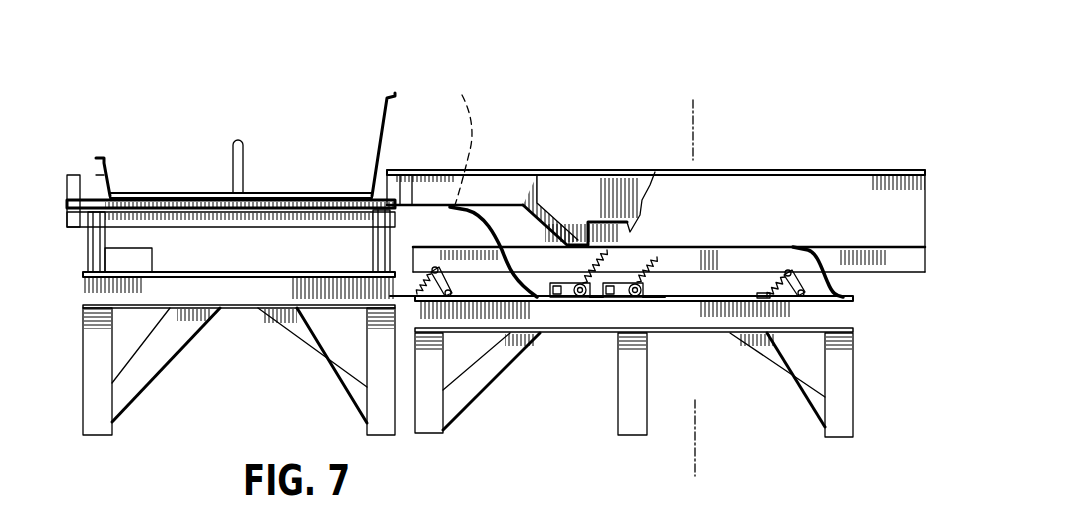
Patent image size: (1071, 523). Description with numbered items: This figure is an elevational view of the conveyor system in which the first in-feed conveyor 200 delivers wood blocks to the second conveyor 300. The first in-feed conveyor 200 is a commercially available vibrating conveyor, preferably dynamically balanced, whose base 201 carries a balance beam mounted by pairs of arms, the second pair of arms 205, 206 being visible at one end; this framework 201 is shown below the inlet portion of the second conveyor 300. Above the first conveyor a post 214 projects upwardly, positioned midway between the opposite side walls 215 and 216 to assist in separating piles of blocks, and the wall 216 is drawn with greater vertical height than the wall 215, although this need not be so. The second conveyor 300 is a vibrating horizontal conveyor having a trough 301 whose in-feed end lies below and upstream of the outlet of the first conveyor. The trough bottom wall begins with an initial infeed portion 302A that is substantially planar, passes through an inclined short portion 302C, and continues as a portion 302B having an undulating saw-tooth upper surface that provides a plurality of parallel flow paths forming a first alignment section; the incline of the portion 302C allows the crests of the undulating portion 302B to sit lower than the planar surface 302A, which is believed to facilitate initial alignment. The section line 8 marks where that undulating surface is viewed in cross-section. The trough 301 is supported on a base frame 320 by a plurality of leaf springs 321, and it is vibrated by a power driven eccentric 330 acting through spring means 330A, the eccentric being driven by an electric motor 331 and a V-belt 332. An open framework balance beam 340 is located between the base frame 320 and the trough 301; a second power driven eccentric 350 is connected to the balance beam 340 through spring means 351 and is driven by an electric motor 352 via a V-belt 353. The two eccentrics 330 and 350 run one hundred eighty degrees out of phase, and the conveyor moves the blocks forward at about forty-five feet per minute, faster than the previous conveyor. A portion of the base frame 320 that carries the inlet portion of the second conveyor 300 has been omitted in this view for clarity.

The first in-feed conveyor 200 is at (178, 120).
The base 201 is at (235, 308).
The arm 205 is at (107, 243).
The arm 206 is at (377, 250).
The post 214 is at (240, 170).
The side wall 215 is at (105, 172).
The side wall 216 is at (377, 113).
The second conveyor 300 is at (513, 92).
The trough 301 is at (834, 208).
The initial infeed portion 302A is at (449, 134).
The undulating portion 302B is at (625, 218).
The inclined short portion 302C is at (553, 228).
The base frame 320 is at (807, 333).
The leaf spring 321 is at (470, 228).
The power driven eccentric 330 is at (592, 290).
The spring means 330A is at (620, 282).
The electric motor 331 is at (549, 298).
The V-belt 332 is at (566, 282).
The open framework balance beam 340 is at (406, 270).
The power driven eccentric 350 is at (657, 300).
The spring means 351 is at (673, 300).
The electric motor 352 is at (614, 298).
The V-belt 353 is at (640, 280).
The section line 8- 8 is at (666, 100).